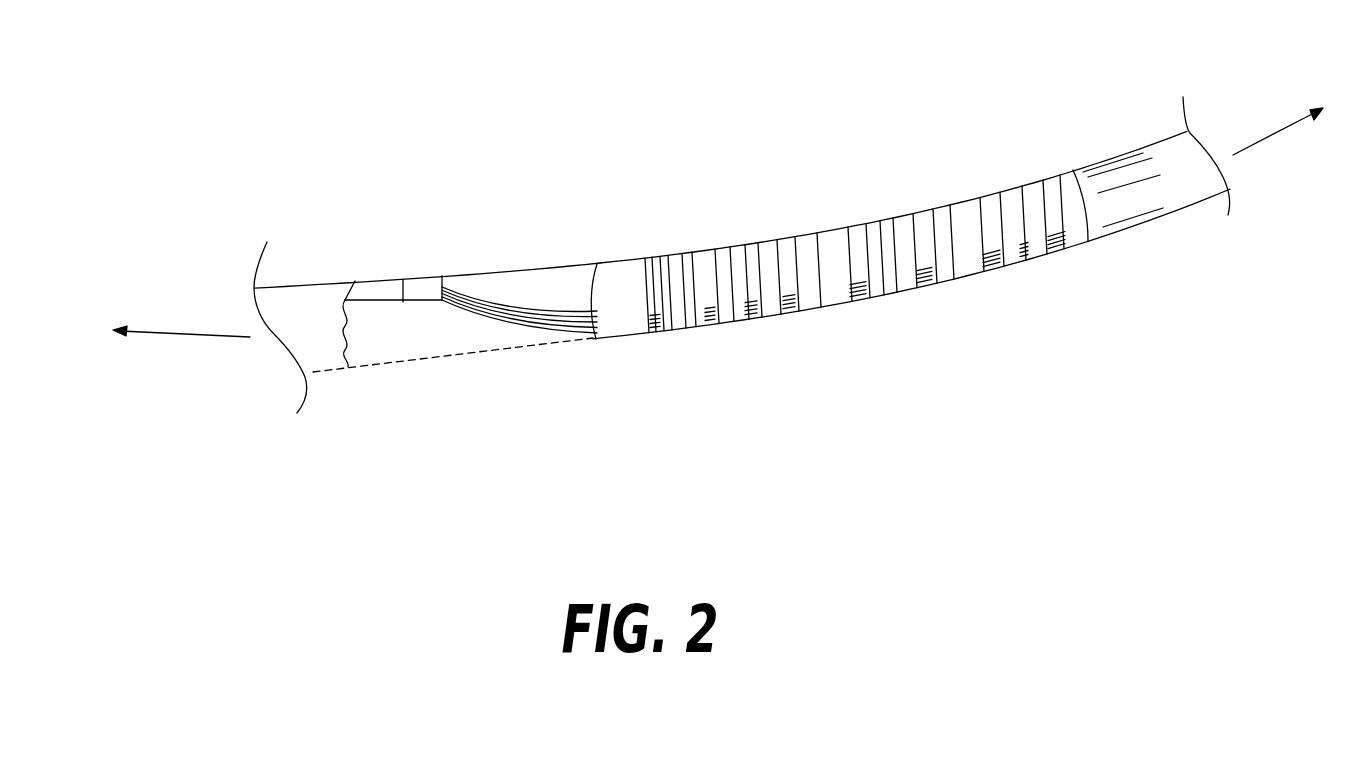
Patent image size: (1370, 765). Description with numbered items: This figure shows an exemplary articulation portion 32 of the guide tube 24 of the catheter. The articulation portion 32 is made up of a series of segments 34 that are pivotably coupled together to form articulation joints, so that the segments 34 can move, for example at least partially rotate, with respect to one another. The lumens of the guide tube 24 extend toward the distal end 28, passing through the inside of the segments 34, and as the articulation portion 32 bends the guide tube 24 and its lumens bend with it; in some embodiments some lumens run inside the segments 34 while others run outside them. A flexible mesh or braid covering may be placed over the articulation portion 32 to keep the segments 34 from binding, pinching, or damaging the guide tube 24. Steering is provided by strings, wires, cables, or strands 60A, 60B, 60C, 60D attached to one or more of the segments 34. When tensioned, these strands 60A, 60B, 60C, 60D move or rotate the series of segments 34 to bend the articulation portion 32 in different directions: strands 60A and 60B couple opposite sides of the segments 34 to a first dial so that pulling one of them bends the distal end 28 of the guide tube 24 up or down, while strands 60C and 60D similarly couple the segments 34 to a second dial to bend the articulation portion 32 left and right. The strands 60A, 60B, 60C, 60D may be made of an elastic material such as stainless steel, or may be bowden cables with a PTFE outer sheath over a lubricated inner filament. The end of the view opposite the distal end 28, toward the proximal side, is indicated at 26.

The guide tube 24 is at (280, 298).
The distal direction 26 is at (177, 335).
The distal end 28 is at (1280, 133).
The articulation portion 32 is at (910, 214).
The segments 34 is at (767, 246).
The strand 60A is at (513, 310).
The strand 60B is at (540, 308).
The strand 60C is at (518, 323).
The strand 60D is at (492, 320).